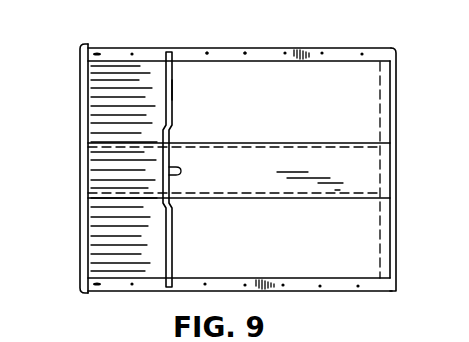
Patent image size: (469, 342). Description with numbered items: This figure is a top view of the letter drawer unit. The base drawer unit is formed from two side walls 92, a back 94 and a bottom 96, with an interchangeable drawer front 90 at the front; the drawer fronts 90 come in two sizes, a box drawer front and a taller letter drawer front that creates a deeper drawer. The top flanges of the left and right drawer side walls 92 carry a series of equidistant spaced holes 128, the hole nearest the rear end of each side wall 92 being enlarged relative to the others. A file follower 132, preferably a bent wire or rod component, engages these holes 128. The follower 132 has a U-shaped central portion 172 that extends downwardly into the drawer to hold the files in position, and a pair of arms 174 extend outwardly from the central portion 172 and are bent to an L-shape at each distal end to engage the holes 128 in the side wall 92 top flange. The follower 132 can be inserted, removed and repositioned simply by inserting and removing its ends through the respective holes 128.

The interchangeable drawer front 90 is at (80, 243).
The drawer side wall 92 is at (323, 46).
The back 94 is at (397, 100).
The bottom 96 is at (298, 108).
The holes 128 is at (247, 48).
The file follower 132 is at (172, 90).
The U-shaped central portion 172 is at (171, 172).
The arms 174 is at (172, 116).